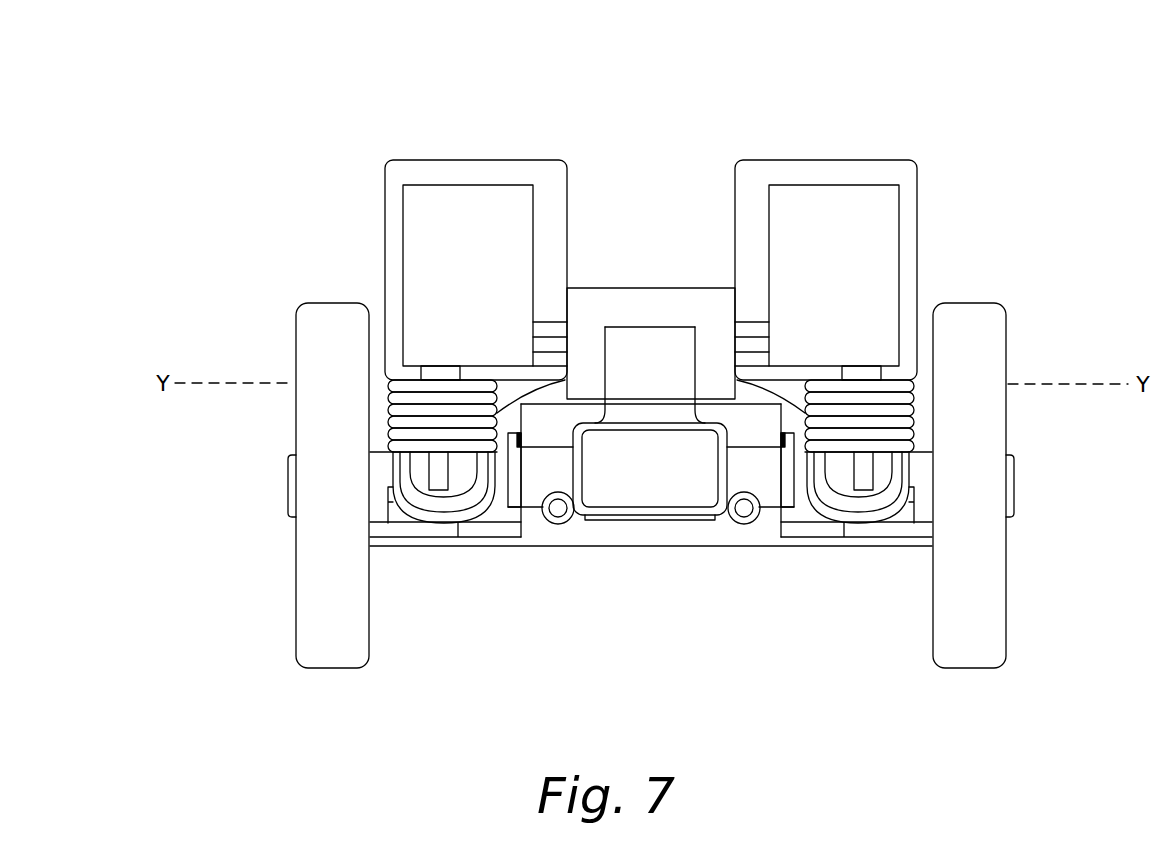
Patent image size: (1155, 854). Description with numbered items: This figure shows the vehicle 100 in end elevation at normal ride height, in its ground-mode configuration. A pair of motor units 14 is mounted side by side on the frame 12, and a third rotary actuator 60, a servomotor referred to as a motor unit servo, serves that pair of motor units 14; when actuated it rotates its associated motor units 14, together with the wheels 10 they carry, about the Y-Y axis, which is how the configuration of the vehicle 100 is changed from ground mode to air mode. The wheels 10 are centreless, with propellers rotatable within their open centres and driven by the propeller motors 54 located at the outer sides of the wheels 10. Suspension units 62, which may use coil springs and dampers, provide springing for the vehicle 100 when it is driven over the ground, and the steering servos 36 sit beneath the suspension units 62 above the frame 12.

The vehicle 100 is at (389, 118).
The wheel 10 is at (312, 249).
The propeller motor 54 is at (290, 483).
The motor unit 14 is at (475, 168).
The third rotary actuator 60 is at (648, 297).
The suspension unit 62 is at (472, 433).
The steering servo 36 is at (427, 482).
The frame 12 is at (648, 533).